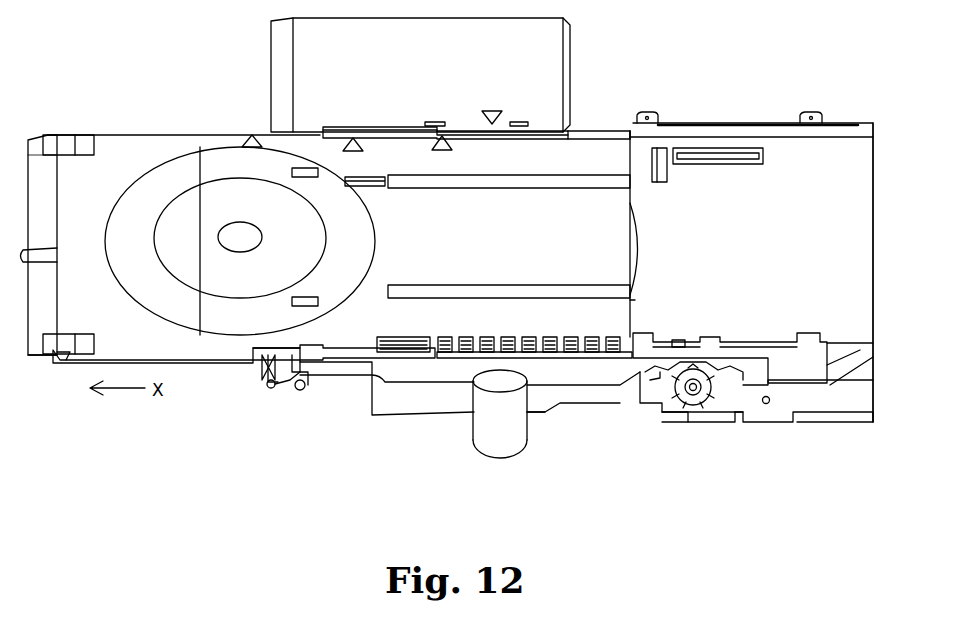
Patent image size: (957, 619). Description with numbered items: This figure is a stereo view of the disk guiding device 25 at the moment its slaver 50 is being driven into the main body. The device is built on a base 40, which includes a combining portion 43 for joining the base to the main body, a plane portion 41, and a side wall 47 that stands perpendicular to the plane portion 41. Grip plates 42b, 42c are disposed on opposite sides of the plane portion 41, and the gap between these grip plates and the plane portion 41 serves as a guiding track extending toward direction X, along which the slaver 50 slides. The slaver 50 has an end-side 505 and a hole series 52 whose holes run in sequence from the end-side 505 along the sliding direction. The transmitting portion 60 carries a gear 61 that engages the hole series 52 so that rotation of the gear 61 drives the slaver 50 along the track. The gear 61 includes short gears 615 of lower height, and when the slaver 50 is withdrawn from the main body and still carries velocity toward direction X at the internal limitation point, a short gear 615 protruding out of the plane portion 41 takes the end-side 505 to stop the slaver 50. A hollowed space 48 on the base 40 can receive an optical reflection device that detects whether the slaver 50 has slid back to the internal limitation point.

The disk guiding device 25 is at (741, 41).
The slaver 50 is at (585, 150).
The hollowed space 48 is at (657, 148).
The plane portion 41 is at (840, 266).
The hole series 52 is at (572, 325).
The end-side 505 is at (637, 308).
The short gears 615 is at (680, 340).
The grip plate 42c is at (772, 352).
The base 40 is at (873, 335).
The side wall 47 is at (864, 413).
The combining portion 43 is at (278, 390).
The grip plate 42b is at (338, 358).
The gear 61 is at (642, 402).
The transmitting portion 60 is at (648, 418).